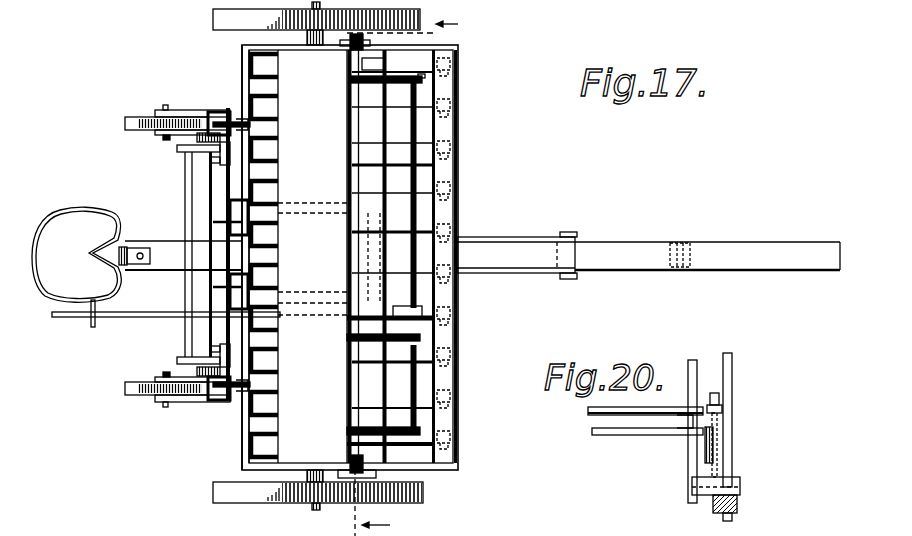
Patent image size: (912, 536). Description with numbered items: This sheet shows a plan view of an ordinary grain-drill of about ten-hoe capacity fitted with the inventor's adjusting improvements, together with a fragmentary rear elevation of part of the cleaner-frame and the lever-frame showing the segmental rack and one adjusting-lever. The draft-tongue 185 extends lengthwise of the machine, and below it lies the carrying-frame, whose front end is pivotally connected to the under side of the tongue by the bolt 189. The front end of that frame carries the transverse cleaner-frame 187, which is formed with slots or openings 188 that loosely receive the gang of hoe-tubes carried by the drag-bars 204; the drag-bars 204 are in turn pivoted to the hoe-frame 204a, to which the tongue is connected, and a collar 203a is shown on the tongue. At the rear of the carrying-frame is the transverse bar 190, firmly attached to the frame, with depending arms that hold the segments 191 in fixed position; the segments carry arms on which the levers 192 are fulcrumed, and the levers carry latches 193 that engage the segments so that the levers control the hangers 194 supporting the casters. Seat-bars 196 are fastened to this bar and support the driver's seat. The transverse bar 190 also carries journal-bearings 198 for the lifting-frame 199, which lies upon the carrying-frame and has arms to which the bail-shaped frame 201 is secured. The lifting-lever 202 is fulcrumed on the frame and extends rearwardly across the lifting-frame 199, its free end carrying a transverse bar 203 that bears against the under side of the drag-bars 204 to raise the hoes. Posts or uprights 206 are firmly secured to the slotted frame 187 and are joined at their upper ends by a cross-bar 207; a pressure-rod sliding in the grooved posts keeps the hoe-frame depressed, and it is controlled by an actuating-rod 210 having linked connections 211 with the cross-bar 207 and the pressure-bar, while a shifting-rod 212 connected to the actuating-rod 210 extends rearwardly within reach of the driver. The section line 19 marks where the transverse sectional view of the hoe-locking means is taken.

In FIG. 17, the section line 19 is at (403, 33).
In FIG. 17, the draft-tongue 185 is at (630, 260).
In FIG. 17, the transverse cleaner-frame 187 is at (268, 84).
In FIG. 17, the slots or openings 188 is at (268, 146).
In FIG. 17, the bolt 189 is at (680, 250).
In FIG. 17, the transverse bar 190 is at (213, 222).
In FIG. 20, the transverse bar 190 is at (608, 436).
In FIG. 17, the segments 191 is at (197, 138).
In FIG. 20, the segments 191 is at (706, 446).
In FIG. 17, the levers 192 is at (235, 116).
In FIG. 20, the levers 192 is at (733, 392).
In FIG. 17, the latches 193 is at (243, 123).
In FIG. 20, the latches 193 is at (733, 436).
In FIG. 17, the hangers 194 is at (222, 114).
In FIG. 20, the hangers 194 is at (738, 504).
In FIG. 17, the seat-bars 196 is at (146, 268).
In FIG. 20, the journal-bearings 198 is at (703, 400).
In FIG. 17, the lifting-frame 199 is at (265, 207).
In FIG. 20, the lifting-frame 199 is at (638, 404).
In FIG. 17, the bail-shaped frame 201 is at (186, 190).
In FIG. 17, the lifting-lever 202 is at (480, 240).
In FIG. 17, the transverse bar 203 is at (375, 122).
In FIG. 17, the collar 203a is at (574, 233).
In FIG. 17, the drag-bars 204 is at (440, 110).
In FIG. 17, the hoe-frame 204a is at (438, 330).
In FIG. 17, the posts or uprights 206 is at (350, 48).
In FIG. 17, the cross-bar 207 is at (355, 245).
In FIG. 17, the actuating-rod 210 is at (446, 203).
In FIG. 17, the linked connections 211 is at (397, 80).
In FIG. 17, the shifting-rod 212 is at (116, 316).